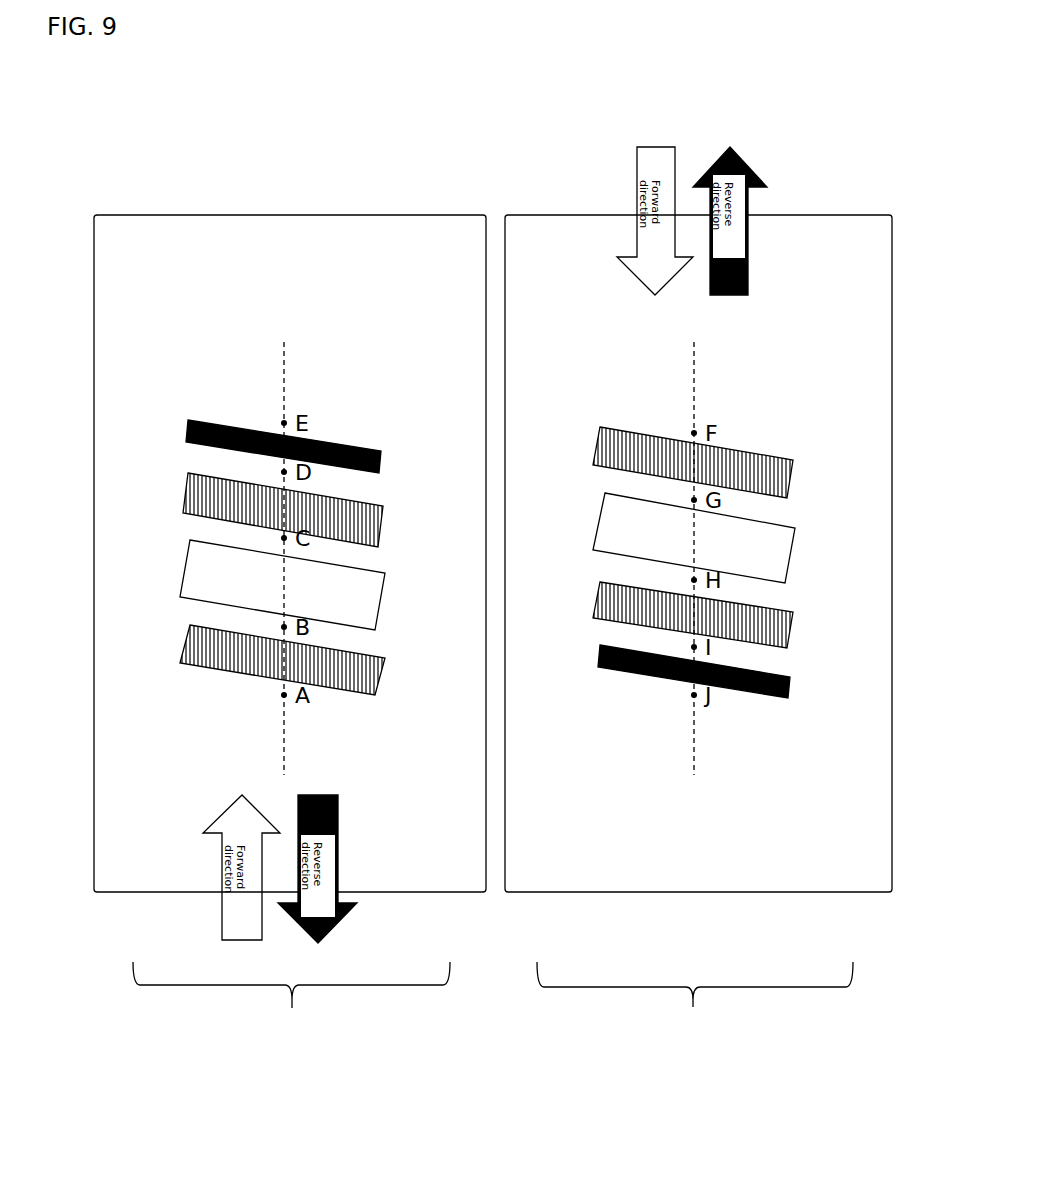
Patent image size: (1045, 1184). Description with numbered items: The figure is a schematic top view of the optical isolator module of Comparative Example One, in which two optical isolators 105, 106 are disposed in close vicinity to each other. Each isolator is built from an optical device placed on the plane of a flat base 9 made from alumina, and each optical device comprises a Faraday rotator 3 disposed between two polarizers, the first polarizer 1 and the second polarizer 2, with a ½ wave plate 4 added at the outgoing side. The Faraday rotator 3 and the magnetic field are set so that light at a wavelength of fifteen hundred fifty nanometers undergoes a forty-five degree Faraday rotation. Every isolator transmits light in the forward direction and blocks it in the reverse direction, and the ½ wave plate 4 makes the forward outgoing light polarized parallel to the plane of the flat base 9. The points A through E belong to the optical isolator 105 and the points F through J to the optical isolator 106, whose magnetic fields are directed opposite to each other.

The first polarizer 1 is at (182, 665).
The second polarizer 2 is at (188, 510).
The Faraday rotator 3 is at (185, 565).
The ½ wave plate 4 is at (187, 445).
The flat base 9 is at (552, 250).
The optical isolator (V) 105 is at (291, 1008).
The optical isolator (VI) 106 is at (695, 1007).